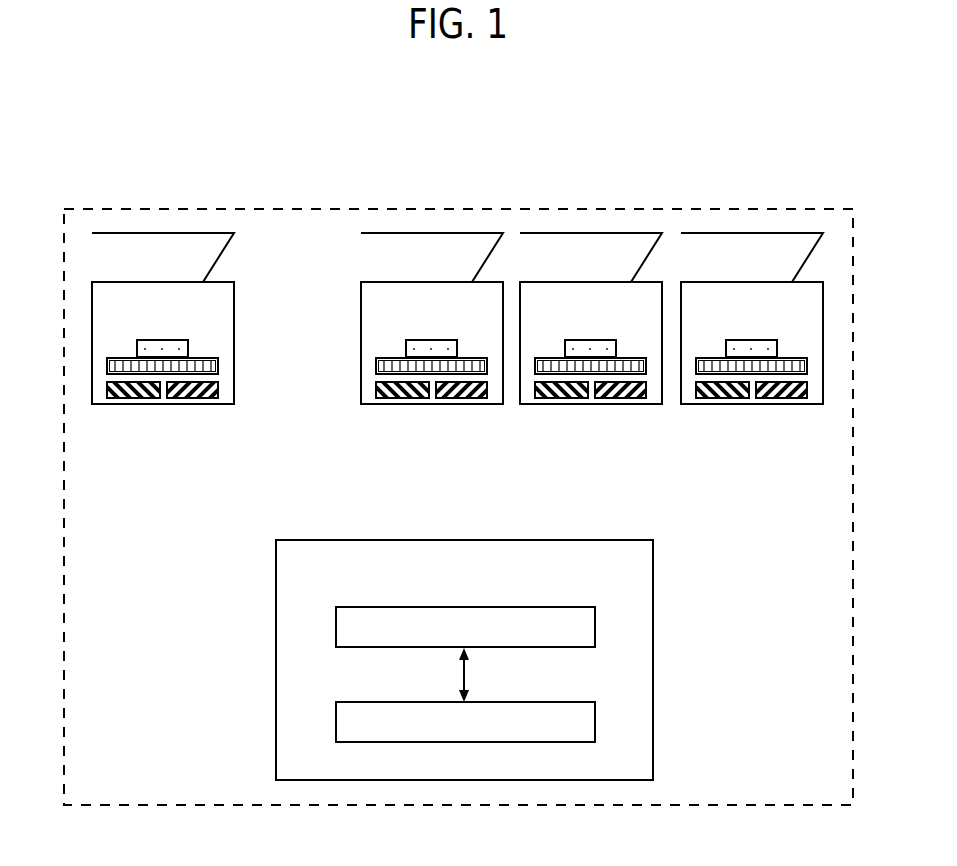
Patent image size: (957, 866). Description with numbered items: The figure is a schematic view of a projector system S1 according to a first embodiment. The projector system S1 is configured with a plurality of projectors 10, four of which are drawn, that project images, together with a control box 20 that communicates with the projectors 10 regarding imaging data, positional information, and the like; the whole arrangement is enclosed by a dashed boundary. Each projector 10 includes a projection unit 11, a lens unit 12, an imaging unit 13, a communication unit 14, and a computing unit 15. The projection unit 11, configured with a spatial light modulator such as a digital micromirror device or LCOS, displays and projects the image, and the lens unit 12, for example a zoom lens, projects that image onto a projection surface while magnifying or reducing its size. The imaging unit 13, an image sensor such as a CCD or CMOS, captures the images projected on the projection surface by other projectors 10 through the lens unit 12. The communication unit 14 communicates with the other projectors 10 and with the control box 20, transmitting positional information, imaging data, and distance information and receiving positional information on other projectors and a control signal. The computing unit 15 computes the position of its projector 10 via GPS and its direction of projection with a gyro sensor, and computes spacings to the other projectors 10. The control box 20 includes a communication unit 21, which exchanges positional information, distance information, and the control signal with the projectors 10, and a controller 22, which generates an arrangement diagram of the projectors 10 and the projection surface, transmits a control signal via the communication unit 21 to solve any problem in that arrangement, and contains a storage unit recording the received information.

The projector system S1 is at (570, 209).
The projector 10 is at (457, 352).
The projection unit 11 is at (188, 348).
The lens unit 12 is at (212, 263).
The imaging unit 13 is at (218, 366).
The communication unit 14 is at (193, 398).
The computing unit 15 is at (138, 398).
The control box 20 is at (509, 646).
The communication unit 21 is at (595, 612).
The controller 22 is at (595, 715).